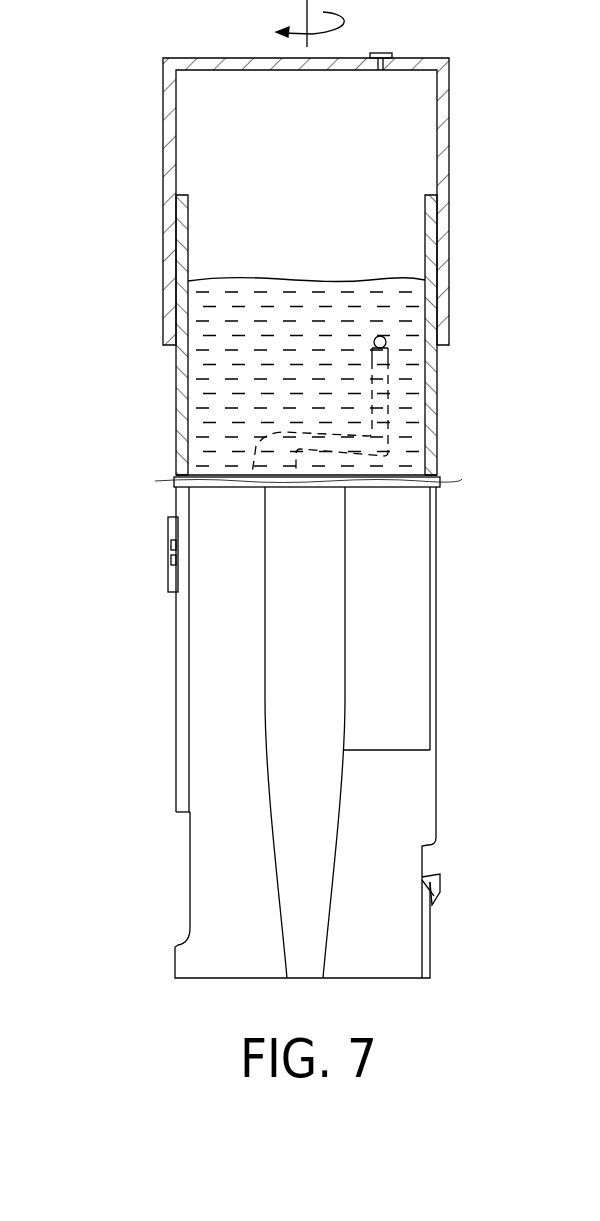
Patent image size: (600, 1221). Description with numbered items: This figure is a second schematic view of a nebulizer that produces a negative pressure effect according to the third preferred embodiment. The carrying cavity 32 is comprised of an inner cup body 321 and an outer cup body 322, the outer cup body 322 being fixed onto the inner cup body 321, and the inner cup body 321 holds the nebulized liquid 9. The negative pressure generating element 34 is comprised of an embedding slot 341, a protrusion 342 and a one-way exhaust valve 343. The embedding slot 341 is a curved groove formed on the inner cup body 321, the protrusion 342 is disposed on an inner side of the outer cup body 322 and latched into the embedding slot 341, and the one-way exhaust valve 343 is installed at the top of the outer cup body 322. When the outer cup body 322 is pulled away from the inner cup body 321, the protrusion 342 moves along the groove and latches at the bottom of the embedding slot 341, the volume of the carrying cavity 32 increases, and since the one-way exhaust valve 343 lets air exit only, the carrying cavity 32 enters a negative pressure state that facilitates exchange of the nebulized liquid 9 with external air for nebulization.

The carrying cavity 32 is at (110, 190).
The inner cup body 321 is at (175, 206).
The outer cup body 322 is at (178, 271).
The negative pressure generating element 34 is at (505, 90).
The embedding slot 341 is at (381, 383).
The protrusion 342 is at (386, 342).
The one-way exhaust valve 343 is at (393, 72).
The nebulized liquid 9 is at (398, 426).